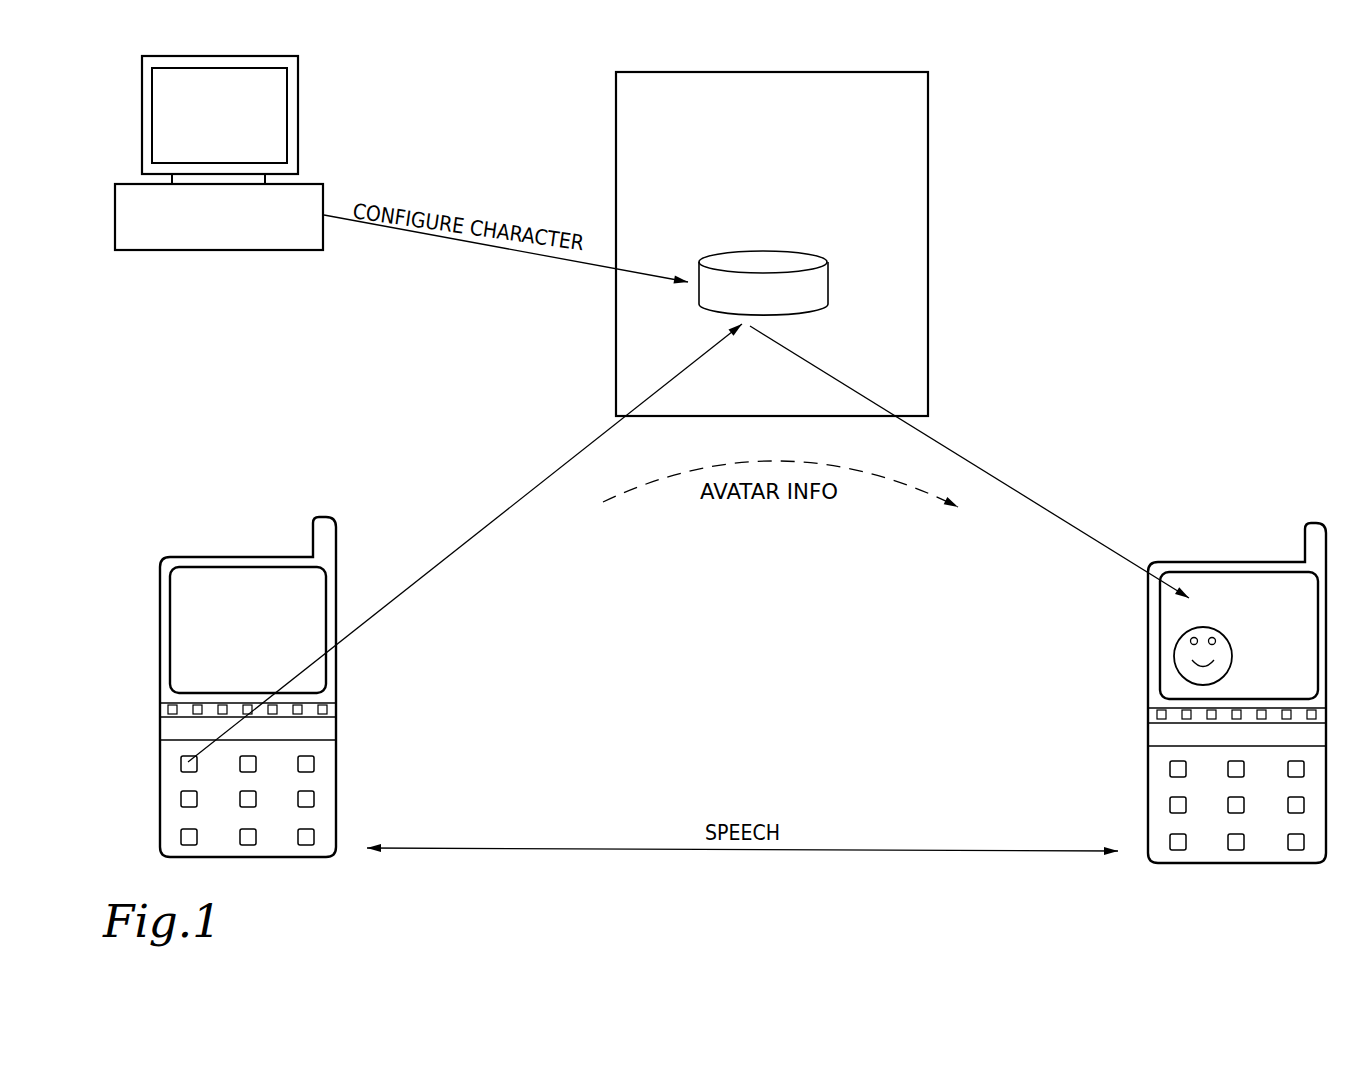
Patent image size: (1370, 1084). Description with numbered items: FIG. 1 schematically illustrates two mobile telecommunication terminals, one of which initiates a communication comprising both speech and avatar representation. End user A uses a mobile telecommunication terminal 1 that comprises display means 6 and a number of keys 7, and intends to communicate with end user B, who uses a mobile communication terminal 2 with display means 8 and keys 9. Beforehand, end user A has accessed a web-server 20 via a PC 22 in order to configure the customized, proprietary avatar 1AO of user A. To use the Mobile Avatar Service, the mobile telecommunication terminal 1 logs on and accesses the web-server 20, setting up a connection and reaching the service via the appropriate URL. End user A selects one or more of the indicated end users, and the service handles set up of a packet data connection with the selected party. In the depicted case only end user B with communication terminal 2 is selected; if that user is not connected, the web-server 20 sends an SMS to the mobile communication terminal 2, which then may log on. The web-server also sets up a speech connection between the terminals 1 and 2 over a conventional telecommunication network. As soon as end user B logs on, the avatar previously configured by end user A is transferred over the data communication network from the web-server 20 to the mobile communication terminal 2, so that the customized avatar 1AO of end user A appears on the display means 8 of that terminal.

The PC 22 is at (298, 117).
The web-server 20 is at (928, 194).
The mobile telecommunication terminal 1 is at (293, 708).
The display means 6 is at (323, 613).
The keys 7 is at (330, 794).
The mobile communication terminal 2 is at (1206, 713).
The display means 8 is at (1163, 677).
The keys 9 is at (1162, 792).
The customized, proprietary avatar 1AO is at (1178, 640).